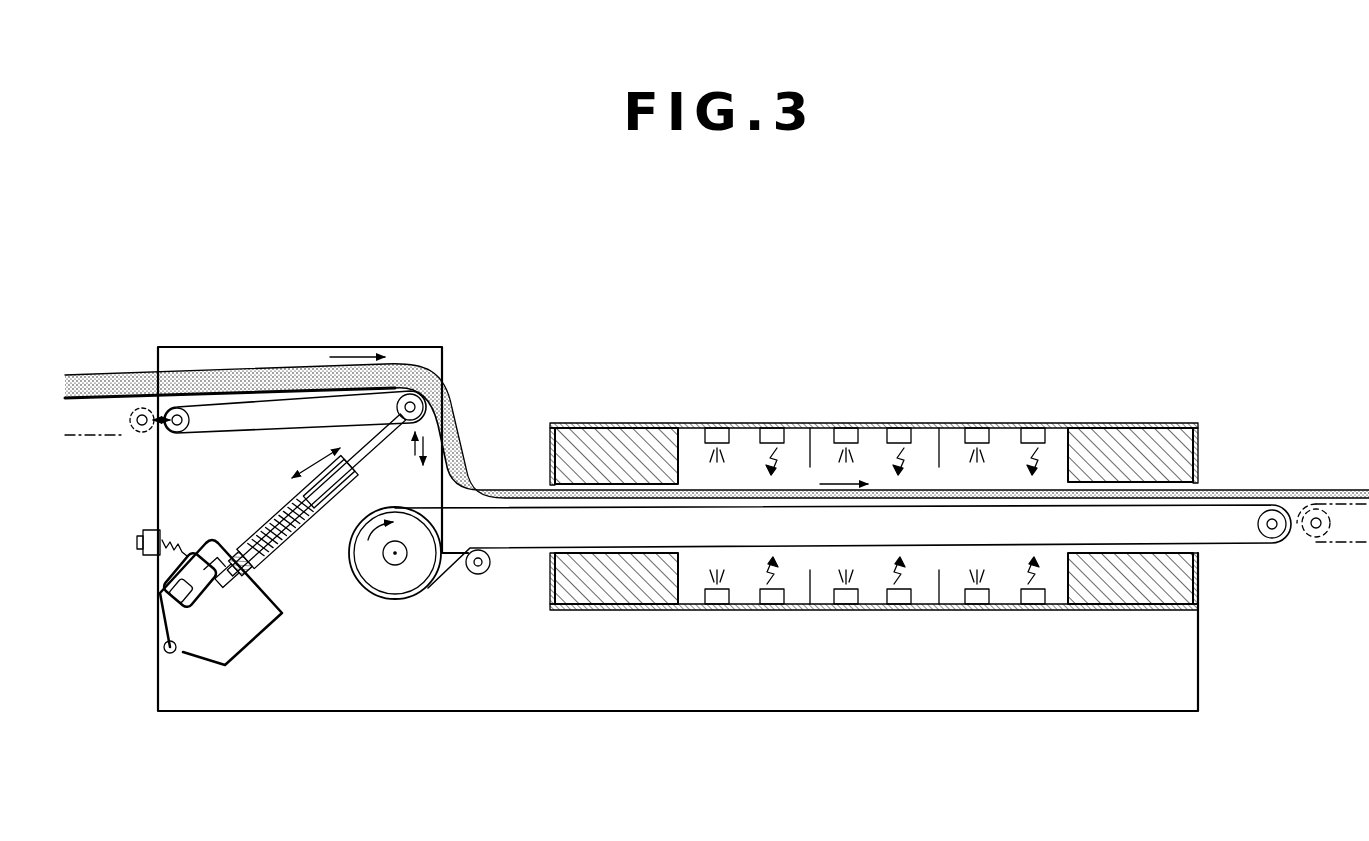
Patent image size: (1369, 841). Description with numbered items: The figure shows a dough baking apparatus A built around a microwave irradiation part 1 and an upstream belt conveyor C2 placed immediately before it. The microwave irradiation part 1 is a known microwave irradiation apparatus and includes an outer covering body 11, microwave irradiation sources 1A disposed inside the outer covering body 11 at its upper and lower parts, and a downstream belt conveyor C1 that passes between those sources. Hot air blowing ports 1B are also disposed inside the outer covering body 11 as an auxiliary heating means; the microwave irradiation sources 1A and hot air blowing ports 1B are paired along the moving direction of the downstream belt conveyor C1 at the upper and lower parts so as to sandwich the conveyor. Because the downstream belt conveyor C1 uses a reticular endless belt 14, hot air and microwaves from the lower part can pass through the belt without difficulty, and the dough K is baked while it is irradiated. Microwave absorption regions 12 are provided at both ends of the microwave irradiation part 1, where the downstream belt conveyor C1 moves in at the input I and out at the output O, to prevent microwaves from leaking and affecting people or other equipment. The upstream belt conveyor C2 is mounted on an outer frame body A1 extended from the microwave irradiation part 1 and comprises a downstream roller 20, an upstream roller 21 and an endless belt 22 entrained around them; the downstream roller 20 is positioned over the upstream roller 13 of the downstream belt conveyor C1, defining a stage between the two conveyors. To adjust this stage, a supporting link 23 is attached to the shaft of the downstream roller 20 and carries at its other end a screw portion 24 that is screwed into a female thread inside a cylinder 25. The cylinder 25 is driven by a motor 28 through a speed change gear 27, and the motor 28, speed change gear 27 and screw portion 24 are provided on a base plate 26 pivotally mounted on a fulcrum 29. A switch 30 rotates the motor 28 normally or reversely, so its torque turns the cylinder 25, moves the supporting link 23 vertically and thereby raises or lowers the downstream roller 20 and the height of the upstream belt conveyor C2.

The dough K is at (236, 378).
The downstream roller 20 is at (442, 394).
The upstream roller 21 is at (163, 426).
The upstream belt conveyor C2 is at (209, 438).
The endless belt 22 is at (266, 432).
The supporting link 23 is at (329, 525).
The screw portion 24 is at (319, 537).
The cylinder 25 is at (280, 528).
The base plate 26 is at (247, 636).
The speed change gear 27 is at (228, 568).
The motor 28 is at (182, 582).
The fulcrum 29 is at (164, 648).
The switch 30 is at (128, 530).
The upstream roller 13 is at (393, 580).
The downstream belt conveyor C1 is at (512, 551).
The endless belt 14 is at (1237, 548).
The input I is at (548, 488).
The output O is at (1197, 490).
The dough baking apparatus A is at (874, 453).
The outer frame body A1 is at (718, 712).
The microwave irradiation part 1 is at (888, 486).
The microwave absorption region 12 is at (606, 432).
The microwave irradiation source 1A is at (898, 432).
The hot air blowing port 1B is at (845, 432).
The outer covering body 11 is at (1040, 430).